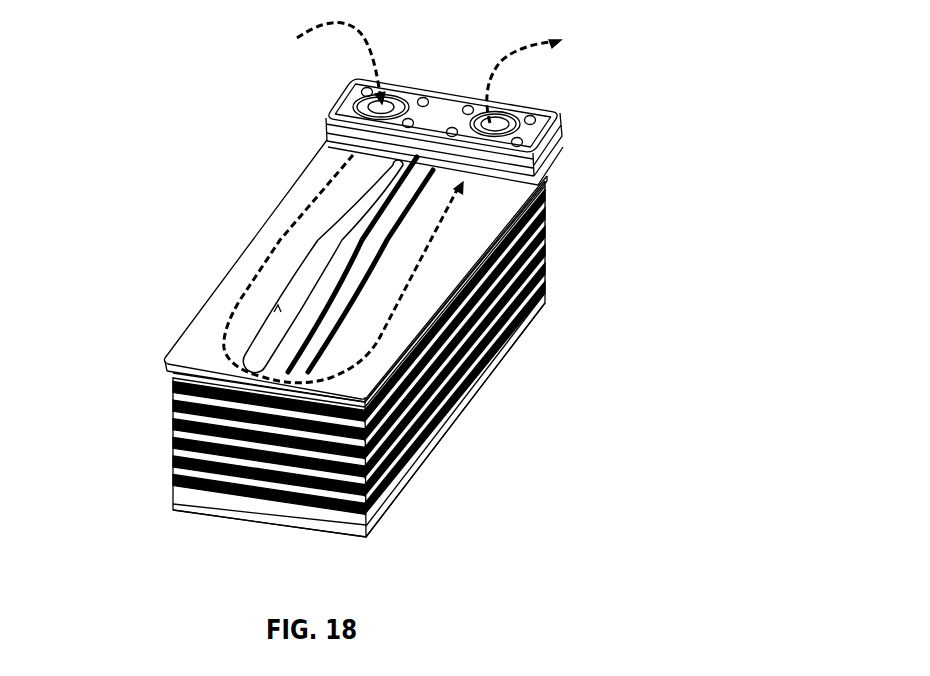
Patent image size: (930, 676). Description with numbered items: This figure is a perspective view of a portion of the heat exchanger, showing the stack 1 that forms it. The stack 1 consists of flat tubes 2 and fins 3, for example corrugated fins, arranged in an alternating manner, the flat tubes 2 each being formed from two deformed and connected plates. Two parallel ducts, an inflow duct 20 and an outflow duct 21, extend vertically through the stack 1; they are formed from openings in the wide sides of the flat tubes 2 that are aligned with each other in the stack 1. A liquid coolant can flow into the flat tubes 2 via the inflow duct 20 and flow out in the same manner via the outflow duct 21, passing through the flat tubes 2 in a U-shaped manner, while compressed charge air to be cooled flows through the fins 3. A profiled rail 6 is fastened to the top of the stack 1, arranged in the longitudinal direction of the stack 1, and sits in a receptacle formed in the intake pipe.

The stack 1 is at (505, 474).
The flat tubes 2 is at (177, 445).
The fins 3 is at (308, 498).
The profiled rails 6 is at (278, 352).
The inflow duct 20 is at (360, 107).
The outflow duct 21 is at (506, 118).